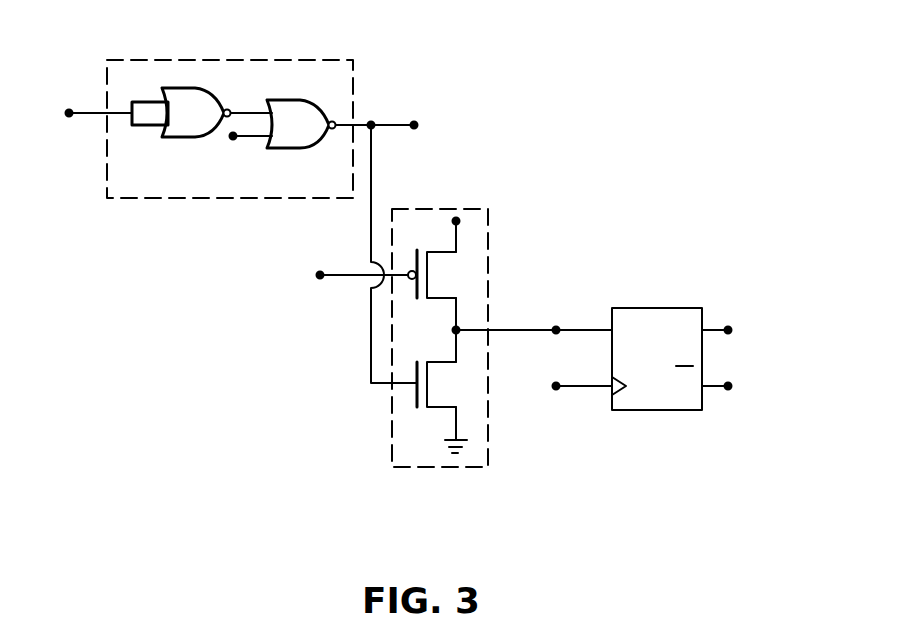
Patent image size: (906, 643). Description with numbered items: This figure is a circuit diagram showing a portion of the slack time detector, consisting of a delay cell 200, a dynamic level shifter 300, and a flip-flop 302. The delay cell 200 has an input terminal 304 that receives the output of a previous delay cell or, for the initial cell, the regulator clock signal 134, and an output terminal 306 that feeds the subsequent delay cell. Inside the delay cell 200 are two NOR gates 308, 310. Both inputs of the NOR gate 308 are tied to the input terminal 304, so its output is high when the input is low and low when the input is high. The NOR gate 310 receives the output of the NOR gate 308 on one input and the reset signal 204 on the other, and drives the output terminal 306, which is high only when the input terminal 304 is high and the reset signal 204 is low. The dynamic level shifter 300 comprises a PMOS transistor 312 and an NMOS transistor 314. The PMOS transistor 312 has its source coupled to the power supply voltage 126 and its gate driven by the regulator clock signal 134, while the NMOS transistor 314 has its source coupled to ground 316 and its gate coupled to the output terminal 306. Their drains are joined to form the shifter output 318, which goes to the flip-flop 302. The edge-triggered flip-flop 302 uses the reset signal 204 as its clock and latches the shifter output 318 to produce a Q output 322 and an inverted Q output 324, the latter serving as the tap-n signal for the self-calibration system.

The delay cell 200 is at (200, 58).
The input terminal 304 is at (69, 113).
The output terminal 306 is at (414, 125).
The NOR gate 308 is at (173, 137).
The NOR gate 310 is at (283, 150).
The reset signal 204 is at (232, 139).
The power supply voltage 126 is at (456, 221).
The PMOS transistor 312 is at (412, 262).
The NMOS transistor 314 is at (413, 397).
The regulator clock signal 134 is at (319, 275).
The dynamic level shifter 300 is at (443, 467).
The ground 316 is at (460, 447).
The shifter output 318 is at (556, 330).
The flip-flop 302 is at (653, 308).
The Q output 322 is at (728, 330).
The inverted Q output 324 is at (728, 386).